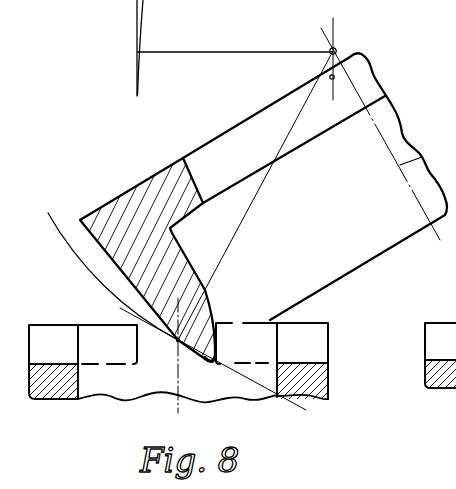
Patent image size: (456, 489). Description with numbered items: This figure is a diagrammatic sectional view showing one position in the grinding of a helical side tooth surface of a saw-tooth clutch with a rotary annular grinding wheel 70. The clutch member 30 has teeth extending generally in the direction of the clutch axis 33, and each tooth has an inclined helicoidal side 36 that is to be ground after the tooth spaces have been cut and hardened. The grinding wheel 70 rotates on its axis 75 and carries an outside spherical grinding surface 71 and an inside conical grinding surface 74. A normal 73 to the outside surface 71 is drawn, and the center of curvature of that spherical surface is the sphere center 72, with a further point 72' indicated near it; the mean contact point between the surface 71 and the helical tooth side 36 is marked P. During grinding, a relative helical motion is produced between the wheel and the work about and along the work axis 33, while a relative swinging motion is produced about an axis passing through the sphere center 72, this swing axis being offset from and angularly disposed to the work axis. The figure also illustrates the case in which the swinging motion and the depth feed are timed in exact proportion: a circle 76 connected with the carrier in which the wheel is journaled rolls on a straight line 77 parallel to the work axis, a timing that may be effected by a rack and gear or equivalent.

The saw-tooth clutch member 30 is at (97, 392).
The clutch axis 33 is at (180, 409).
The helical tooth side 36 is at (207, 359).
The rotary annular grinding wheel 70 is at (345, 260).
The outside spherical grinding surface 71 is at (130, 315).
The center of curvature 72 is at (349, 59).
The alternate pivot point 72' is at (321, 96).
The normal to the outside grinding surface 73 is at (250, 208).
The inside conical grinding surface 74 is at (215, 310).
The axis of the grinding wheel 75 is at (423, 152).
The circle connected with the carrier 76 is at (140, 95).
The line parallel to the work axis 77 is at (136, 93).
The cutting point P is at (176, 343).